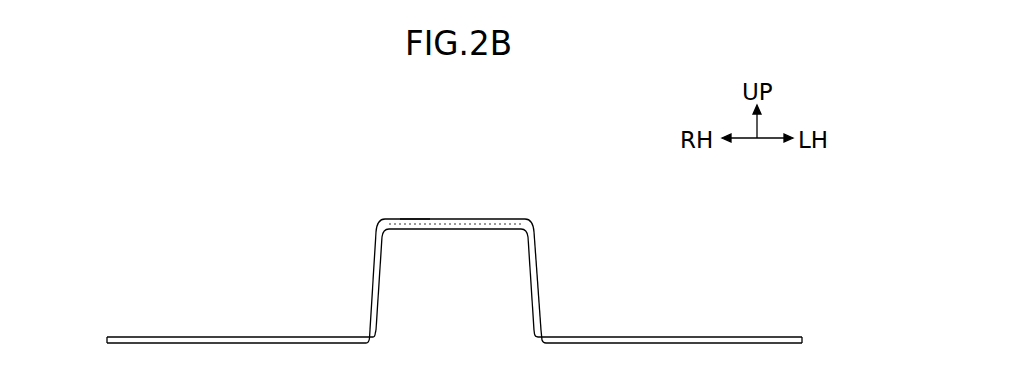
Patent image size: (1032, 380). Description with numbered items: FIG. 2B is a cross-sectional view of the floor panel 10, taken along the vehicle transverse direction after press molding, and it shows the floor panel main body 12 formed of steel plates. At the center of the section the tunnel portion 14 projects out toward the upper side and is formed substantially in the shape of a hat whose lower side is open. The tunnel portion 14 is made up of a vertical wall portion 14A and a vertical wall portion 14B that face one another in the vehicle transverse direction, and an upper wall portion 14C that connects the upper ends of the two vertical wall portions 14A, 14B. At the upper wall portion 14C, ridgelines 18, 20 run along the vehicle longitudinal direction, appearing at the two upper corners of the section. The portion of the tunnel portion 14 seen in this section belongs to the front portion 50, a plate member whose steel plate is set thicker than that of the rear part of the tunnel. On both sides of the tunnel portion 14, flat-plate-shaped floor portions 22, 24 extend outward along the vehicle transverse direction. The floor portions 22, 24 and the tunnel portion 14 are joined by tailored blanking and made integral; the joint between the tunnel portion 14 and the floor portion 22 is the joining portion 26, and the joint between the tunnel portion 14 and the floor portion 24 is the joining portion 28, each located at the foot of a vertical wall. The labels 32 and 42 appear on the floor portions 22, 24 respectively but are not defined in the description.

The floor panel 10 is at (769, 241).
The floor panel main body 12 is at (794, 330).
The tunnel portion 14 is at (501, 211).
The vertical wall portion 14A is at (374, 265).
The vertical wall portion 14B is at (538, 264).
The upper wall portion 14C is at (450, 219).
The ridgeline 18 is at (377, 219).
The ridgeline 20 is at (537, 219).
The floor portion 22 is at (233, 312).
The floor portion 24 is at (673, 312).
The joining portion 26 is at (340, 337).
The joining portion 28 is at (571, 336).
The first joint portion 32 is at (176, 332).
The second joint portion 42 is at (688, 330).
The front portion 50 is at (413, 219).